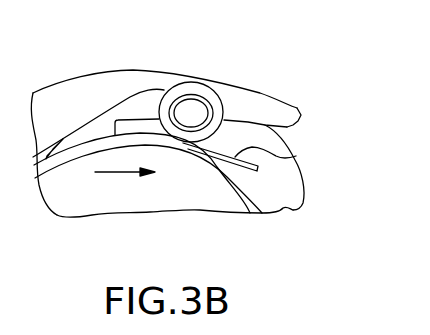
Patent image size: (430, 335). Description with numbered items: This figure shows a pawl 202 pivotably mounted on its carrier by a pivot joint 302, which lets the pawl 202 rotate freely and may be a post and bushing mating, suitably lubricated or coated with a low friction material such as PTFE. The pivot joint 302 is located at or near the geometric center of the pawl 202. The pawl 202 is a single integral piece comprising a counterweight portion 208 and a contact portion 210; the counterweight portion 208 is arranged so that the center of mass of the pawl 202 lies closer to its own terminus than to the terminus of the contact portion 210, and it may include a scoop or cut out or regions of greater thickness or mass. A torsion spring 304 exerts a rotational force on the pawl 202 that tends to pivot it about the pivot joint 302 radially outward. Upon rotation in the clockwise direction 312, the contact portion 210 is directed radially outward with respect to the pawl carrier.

The pawl 202 is at (248, 100).
The counterweight portion 208 is at (83, 133).
The contact portion 210 is at (284, 108).
The pivot joint 302 is at (187, 108).
The torsion spring 304 is at (296, 156).
The clockwise direction 312 is at (108, 173).